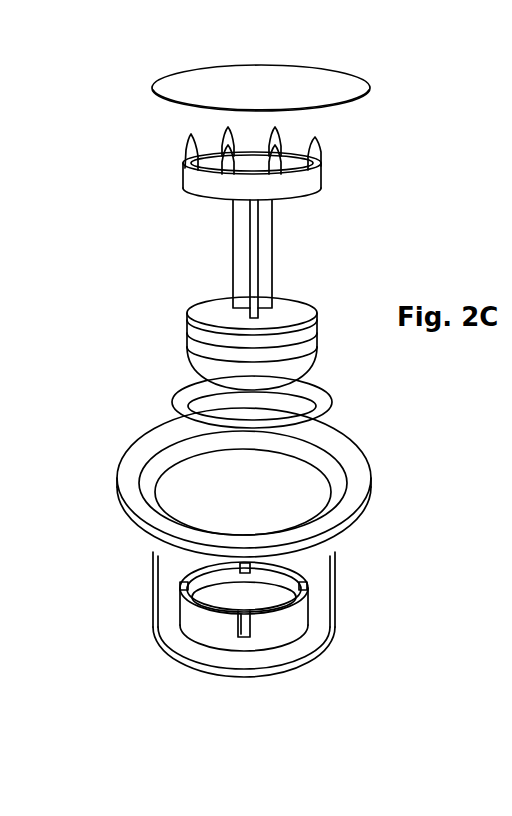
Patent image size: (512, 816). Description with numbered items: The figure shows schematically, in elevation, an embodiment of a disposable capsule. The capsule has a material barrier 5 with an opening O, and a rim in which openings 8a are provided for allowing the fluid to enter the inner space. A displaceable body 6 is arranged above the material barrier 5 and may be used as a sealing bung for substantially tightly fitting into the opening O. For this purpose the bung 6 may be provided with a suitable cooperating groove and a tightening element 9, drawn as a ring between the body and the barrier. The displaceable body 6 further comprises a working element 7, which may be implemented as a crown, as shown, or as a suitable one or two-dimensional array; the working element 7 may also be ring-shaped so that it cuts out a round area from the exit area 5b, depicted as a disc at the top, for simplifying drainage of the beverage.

The exit area 5b is at (368, 88).
The working element 7 is at (323, 178).
The displaceable body 6 is at (288, 311).
The tightening element 9 is at (175, 392).
The material barrier 5 is at (152, 585).
The openings 8a is at (240, 633).
The opening O is at (258, 600).